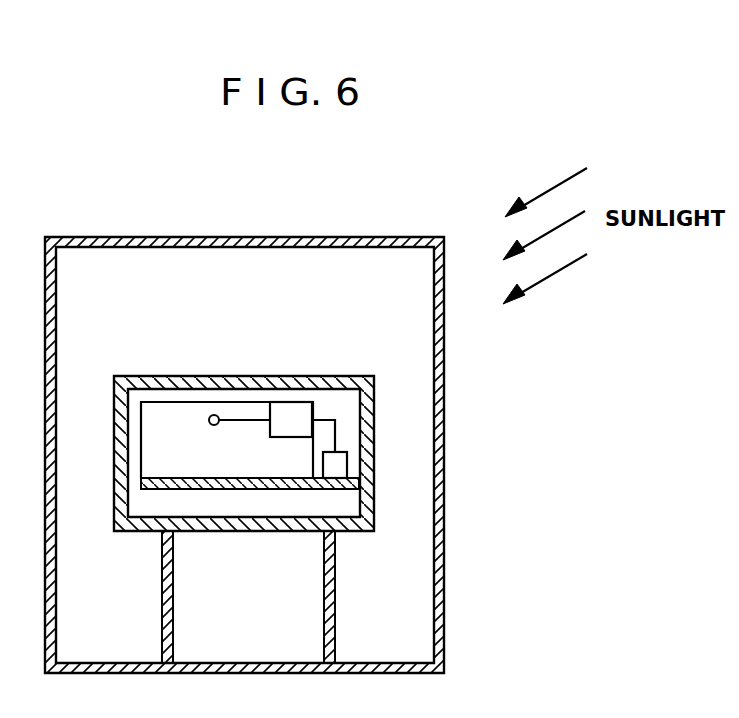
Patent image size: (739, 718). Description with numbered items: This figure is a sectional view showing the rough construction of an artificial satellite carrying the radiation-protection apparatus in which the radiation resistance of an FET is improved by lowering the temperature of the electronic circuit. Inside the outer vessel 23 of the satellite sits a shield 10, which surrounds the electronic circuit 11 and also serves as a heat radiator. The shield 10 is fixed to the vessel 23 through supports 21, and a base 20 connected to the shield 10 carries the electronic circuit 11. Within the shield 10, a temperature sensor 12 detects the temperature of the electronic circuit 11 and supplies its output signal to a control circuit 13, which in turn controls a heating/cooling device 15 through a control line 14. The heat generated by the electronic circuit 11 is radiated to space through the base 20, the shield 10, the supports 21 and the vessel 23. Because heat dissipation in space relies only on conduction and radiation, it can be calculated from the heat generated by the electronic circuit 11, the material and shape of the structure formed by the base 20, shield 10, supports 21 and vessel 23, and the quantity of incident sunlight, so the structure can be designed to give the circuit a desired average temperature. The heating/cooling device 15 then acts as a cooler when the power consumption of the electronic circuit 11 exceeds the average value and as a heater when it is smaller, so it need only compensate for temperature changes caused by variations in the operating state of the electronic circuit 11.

The shield 10 is at (282, 375).
The electronic circuit 11 is at (176, 418).
The temperature sensor 12 is at (214, 415).
The control circuit 13 is at (293, 410).
The control line 14 is at (336, 425).
The heating/cooling device 15 is at (348, 467).
The base 20 is at (303, 490).
The supports 21 is at (175, 620).
The vessel 23 is at (446, 618).